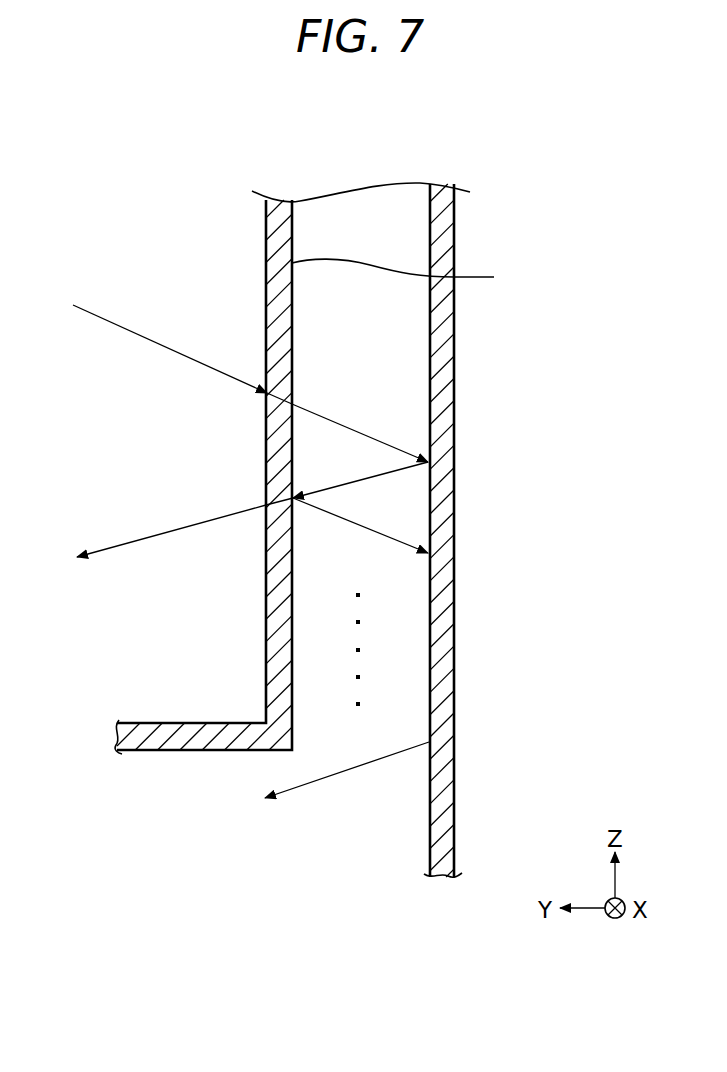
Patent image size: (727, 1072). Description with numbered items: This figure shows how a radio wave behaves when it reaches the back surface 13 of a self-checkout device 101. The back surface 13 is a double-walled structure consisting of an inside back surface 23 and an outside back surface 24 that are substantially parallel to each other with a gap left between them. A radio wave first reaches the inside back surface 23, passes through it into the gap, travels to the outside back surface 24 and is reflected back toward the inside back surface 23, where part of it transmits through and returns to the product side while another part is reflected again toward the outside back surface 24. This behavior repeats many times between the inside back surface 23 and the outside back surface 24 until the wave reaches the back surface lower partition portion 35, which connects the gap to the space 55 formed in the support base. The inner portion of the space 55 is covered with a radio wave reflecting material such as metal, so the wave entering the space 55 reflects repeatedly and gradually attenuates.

The display device 101 is at (458, 144).
The back surface 13 is at (537, 262).
The inside back surface 23 is at (412, 275).
The outside back surface 24 is at (454, 312).
The back surface lower partition portion 35 is at (370, 745).
The space 55 is at (254, 838).